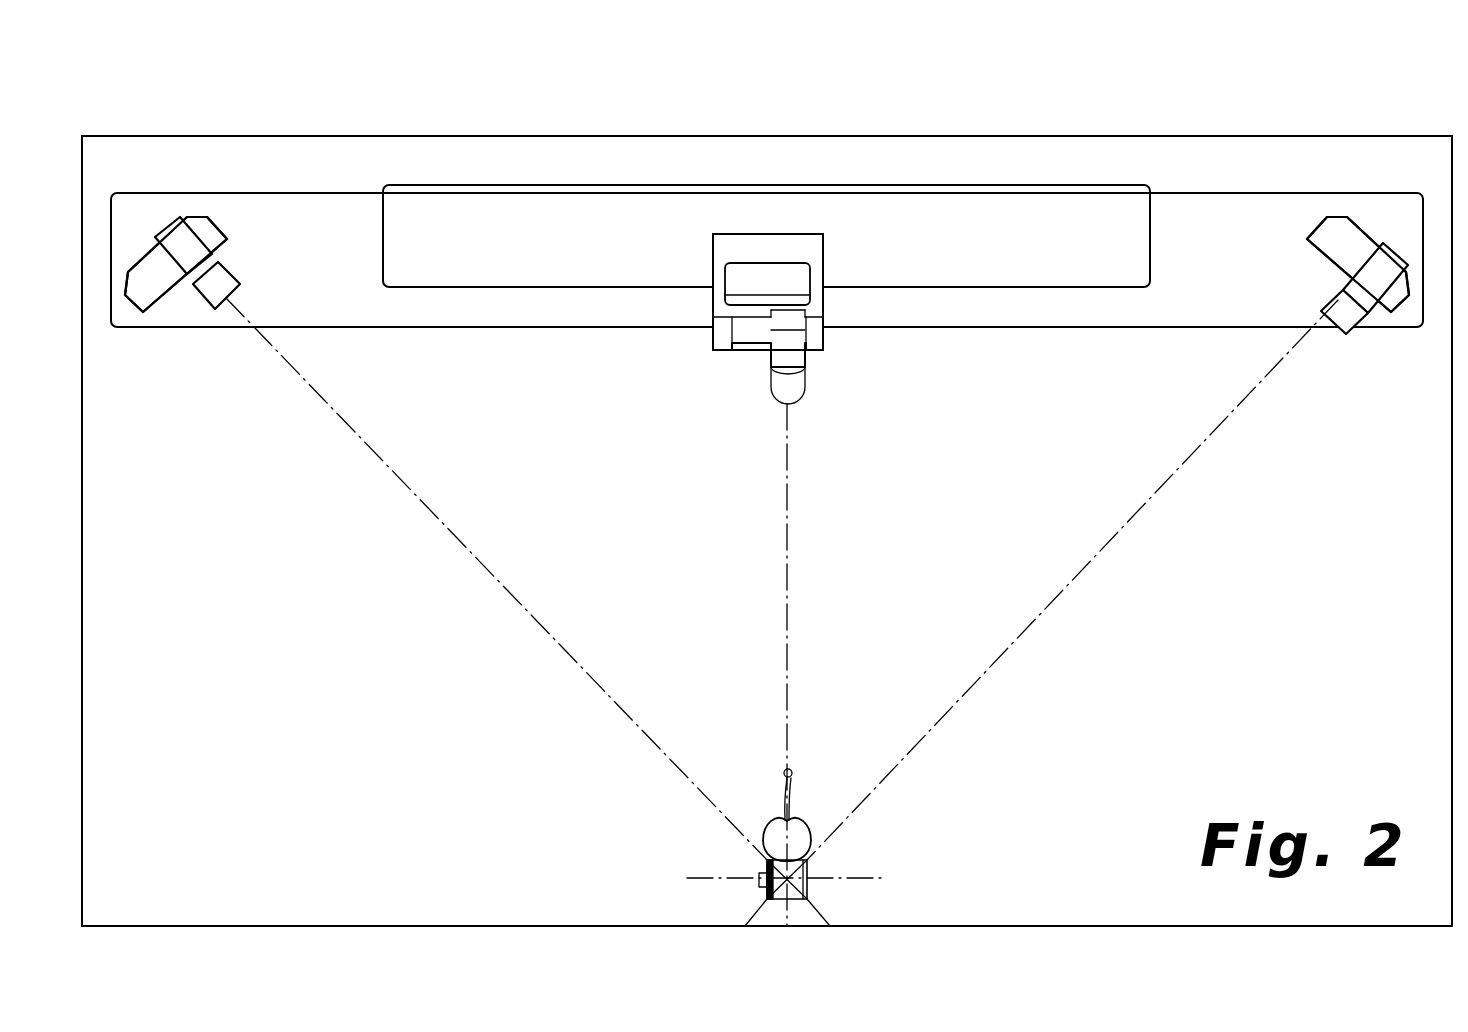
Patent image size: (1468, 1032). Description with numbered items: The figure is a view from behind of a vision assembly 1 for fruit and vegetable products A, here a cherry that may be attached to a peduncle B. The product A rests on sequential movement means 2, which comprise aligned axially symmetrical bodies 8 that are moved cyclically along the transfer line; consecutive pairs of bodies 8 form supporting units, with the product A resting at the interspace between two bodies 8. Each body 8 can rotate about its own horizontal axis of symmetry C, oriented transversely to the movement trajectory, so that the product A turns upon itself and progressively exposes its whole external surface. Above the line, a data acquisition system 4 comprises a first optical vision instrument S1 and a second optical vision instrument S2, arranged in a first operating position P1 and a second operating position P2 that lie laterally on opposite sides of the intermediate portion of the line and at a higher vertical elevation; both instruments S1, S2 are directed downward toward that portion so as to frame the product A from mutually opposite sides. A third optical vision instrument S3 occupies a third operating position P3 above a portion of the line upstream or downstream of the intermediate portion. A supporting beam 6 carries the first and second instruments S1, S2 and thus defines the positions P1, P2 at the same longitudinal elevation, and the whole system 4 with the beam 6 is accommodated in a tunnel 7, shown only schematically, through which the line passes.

The vision assembly 1 is at (1285, 106).
The sequential movement means 2 is at (826, 868).
The data acquisition system 4 is at (1088, 125).
The supporting beam 6 is at (338, 232).
The tunnel 7 is at (555, 135).
The axially symmetrical body 8 is at (805, 890).
The fruit and vegetable product A is at (810, 818).
The peduncle B is at (781, 797).
The axis of symmetry C is at (692, 878).
The first operating position P1 is at (160, 208).
The second operating position P2 is at (1374, 208).
The third operating position P3 is at (821, 214).
The first optical vision instrument S1 is at (212, 298).
The second optical vision instrument S2 is at (1353, 318).
The third optical vision instrument S3 is at (797, 353).